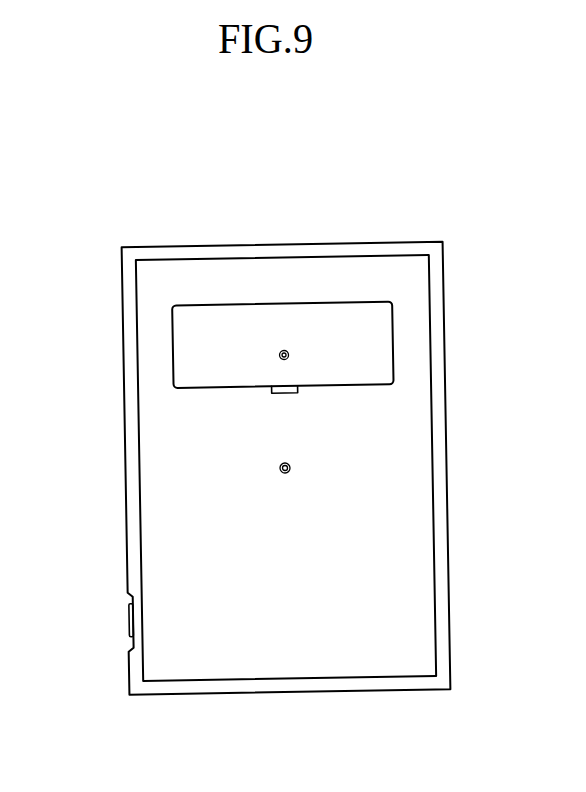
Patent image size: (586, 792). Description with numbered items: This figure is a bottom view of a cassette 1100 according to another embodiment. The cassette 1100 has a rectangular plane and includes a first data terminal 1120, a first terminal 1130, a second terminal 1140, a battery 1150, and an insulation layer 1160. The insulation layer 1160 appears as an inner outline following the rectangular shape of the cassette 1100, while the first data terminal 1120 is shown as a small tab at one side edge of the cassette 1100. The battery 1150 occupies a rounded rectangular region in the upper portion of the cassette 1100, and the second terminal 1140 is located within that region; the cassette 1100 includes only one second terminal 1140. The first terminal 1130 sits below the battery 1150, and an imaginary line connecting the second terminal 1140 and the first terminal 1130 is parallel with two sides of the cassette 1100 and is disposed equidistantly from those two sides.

The cassette 1100 is at (436, 155).
The first data terminal 1120 is at (130, 620).
The first terminal 1130 is at (280, 468).
The second terminal 1140 is at (286, 350).
The battery 1150 is at (395, 345).
The insulation layer 1160 is at (286, 678).